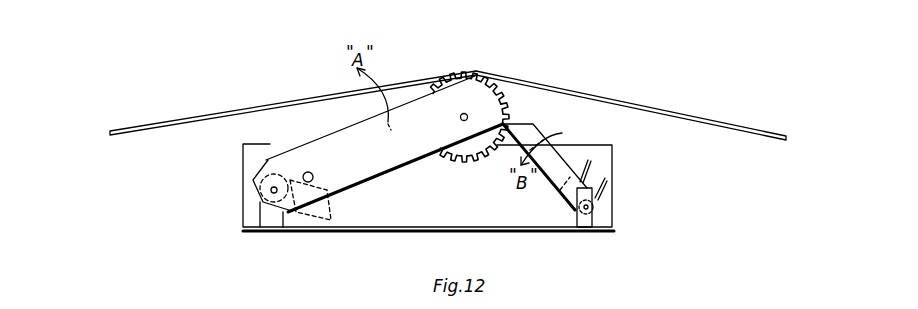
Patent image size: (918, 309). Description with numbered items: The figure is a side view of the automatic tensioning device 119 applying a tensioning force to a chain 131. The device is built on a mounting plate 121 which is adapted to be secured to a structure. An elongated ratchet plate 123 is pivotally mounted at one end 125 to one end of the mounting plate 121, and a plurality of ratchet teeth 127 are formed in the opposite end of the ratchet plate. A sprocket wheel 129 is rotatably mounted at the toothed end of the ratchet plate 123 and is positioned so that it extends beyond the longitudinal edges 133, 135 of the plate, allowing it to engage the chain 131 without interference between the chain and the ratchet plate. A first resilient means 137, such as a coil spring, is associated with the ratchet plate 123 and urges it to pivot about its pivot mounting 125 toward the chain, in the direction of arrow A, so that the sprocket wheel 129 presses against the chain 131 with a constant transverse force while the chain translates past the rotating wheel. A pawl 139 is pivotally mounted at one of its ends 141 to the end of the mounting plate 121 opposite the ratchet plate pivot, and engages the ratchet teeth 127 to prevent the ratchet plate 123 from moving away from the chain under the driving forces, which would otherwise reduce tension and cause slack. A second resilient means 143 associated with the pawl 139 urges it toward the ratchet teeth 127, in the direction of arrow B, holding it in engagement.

The automatic tensioning device 119 is at (479, 224).
The mounting plate 121 is at (390, 213).
The ratchet plate 123 is at (372, 128).
The pivot mounting end 125 is at (271, 191).
The ratchet teeth 127 is at (498, 86).
The sprocket wheel 129 is at (462, 70).
The chain 131 is at (561, 88).
The longitudinal edge of the ratchet plate 133 is at (403, 105).
The longitudinal edge of the ratchet plate 135 is at (400, 166).
The first resilient means 137 is at (312, 232).
The pawl 139 is at (547, 153).
The pawl pivot end 141 is at (592, 205).
The second resilient means 143 is at (594, 212).